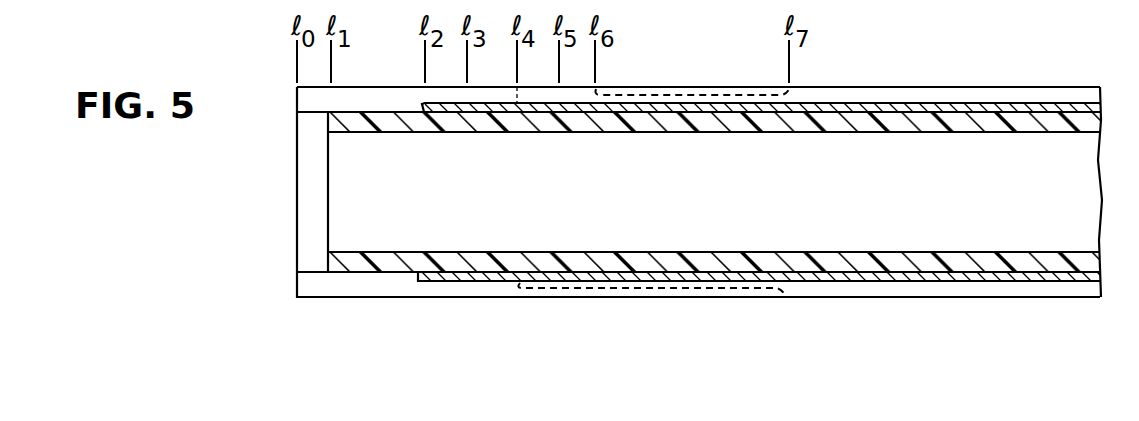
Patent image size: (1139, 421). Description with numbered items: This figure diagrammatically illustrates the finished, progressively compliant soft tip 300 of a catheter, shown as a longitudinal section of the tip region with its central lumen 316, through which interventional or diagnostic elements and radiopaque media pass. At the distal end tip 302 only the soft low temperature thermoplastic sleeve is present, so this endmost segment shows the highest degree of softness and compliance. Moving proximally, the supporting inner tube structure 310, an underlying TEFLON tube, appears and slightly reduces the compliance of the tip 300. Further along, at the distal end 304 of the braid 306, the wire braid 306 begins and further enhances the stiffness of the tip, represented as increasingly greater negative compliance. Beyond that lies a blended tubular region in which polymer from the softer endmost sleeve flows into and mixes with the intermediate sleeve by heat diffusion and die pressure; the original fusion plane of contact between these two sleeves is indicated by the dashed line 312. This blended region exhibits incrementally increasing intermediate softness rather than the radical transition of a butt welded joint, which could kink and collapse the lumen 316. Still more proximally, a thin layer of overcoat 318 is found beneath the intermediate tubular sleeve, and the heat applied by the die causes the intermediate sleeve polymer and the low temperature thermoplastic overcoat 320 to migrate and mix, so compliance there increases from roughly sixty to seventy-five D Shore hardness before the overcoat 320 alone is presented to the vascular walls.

The progressively compliant soft tip 300 is at (386, 297).
The distal end tip 302 is at (297, 297).
The distal end of braid 304 is at (418, 278).
The wire braid 306 is at (477, 281).
The inner tube structure 310 is at (363, 273).
The dashed line 312 is at (518, 283).
The lumen 316 is at (695, 204).
The thin layer of overcoat 318 is at (660, 288).
The low temperature thermoplastic overcoat 320 is at (887, 298).